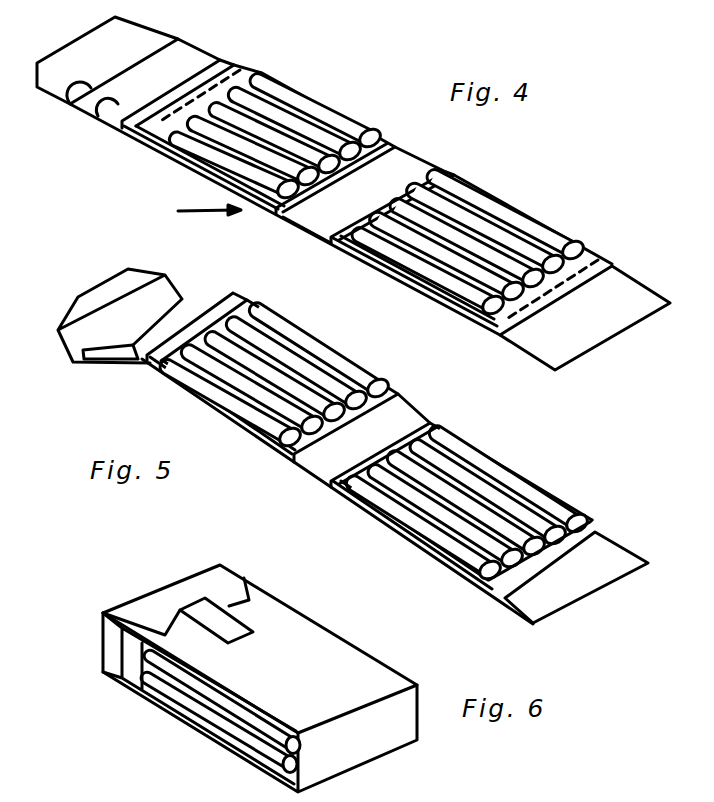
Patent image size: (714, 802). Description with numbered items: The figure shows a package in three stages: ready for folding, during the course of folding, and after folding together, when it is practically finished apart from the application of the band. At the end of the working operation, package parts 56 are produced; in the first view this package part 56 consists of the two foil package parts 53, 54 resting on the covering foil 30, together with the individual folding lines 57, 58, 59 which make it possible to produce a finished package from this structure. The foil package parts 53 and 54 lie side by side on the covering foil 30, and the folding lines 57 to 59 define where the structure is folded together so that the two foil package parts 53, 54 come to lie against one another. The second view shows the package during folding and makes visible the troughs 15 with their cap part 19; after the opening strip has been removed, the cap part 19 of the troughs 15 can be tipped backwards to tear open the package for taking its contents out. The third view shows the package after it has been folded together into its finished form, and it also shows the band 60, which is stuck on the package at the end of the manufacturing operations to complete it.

In FIG. 4, the folding line 59 is at (70, 101).
In FIG. 4, the foil package part 53 is at (217, 152).
In FIG. 4, the package part 56 is at (189, 212).
In FIG. 4, the covering foil 30 is at (283, 216).
In FIG. 4, the folding line 57 is at (372, 174).
In FIG. 4, the foil package part 54 is at (428, 265).
In FIG. 4, the folding line 58 is at (537, 350).
In FIG. 5, the cap part 19 is at (113, 354).
In FIG. 5, the trough 15 is at (233, 410).
In FIG. 6, the band 60 is at (236, 634).